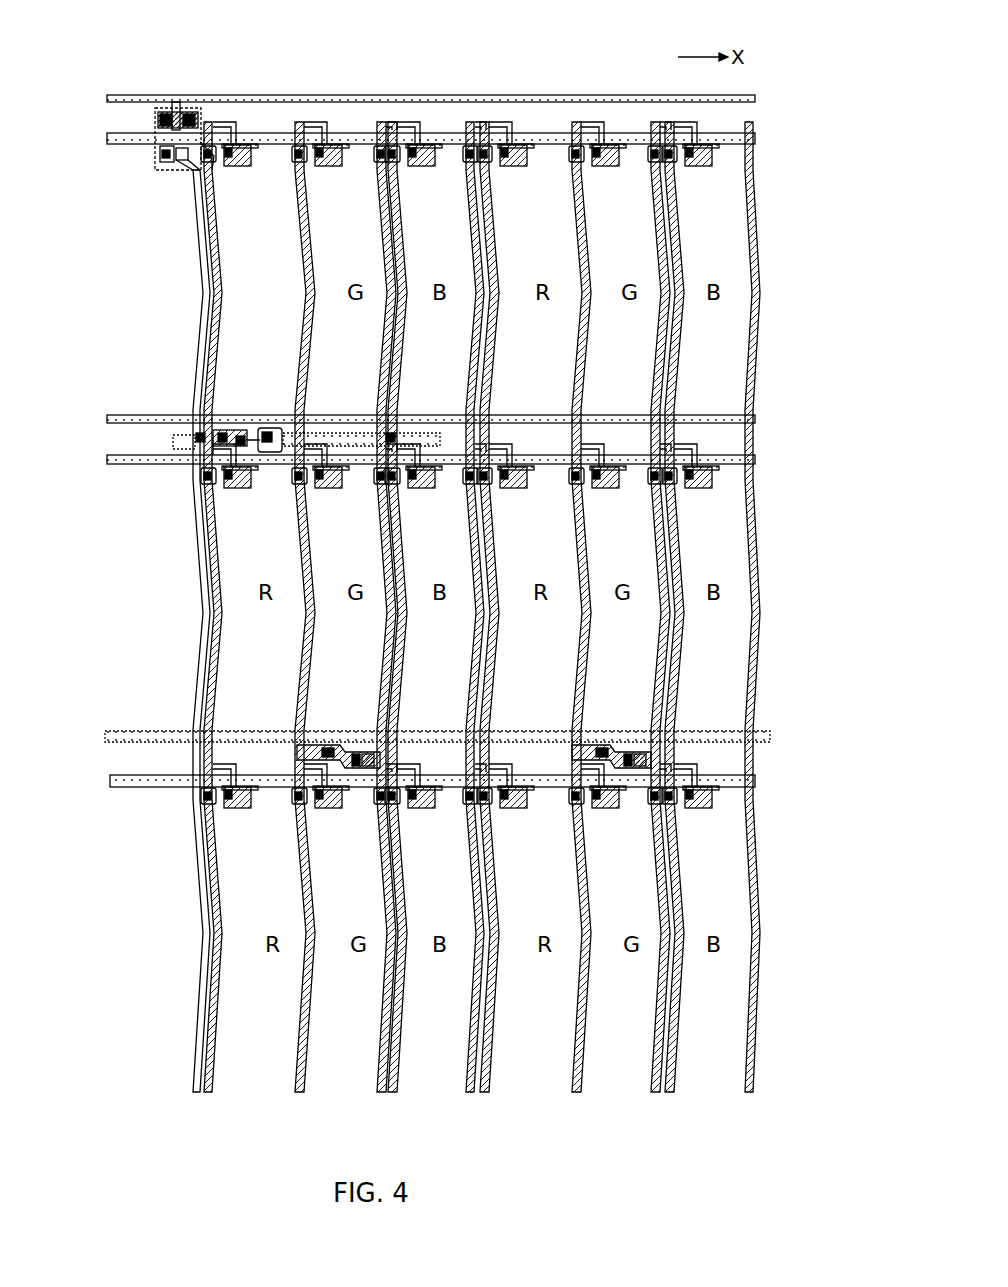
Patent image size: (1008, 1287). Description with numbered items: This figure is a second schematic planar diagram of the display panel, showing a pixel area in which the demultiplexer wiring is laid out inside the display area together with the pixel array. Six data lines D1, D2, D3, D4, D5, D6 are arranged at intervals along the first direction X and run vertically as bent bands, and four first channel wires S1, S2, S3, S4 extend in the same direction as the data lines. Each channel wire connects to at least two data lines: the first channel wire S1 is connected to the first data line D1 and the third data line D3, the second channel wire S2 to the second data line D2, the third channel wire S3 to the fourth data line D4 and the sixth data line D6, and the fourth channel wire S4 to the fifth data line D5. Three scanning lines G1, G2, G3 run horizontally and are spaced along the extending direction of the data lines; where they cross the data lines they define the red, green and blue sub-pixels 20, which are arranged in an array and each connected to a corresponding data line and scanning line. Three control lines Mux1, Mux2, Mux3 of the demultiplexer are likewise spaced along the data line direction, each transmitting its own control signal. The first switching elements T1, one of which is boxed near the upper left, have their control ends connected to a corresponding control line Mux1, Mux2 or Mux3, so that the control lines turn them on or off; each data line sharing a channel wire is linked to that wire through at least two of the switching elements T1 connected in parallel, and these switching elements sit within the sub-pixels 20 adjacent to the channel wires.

The first switching element T1 is at (168, 105).
The sub-pixel 20 is at (266, 178).
The first control line Mux1 is at (401, 87).
The second control line Mux2 is at (402, 418).
The third control line Mux3 is at (409, 741).
The scanning line G1 is at (401, 141).
The scanning line G2 is at (414, 460).
The scanning line G3 is at (414, 782).
The first channel wire S1 is at (182, 658).
The first channel wire S2 is at (377, 634).
The first channel wire S3 is at (468, 634).
The first channel wire S4 is at (655, 634).
The data line D1 is at (235, 634).
The data line D2 is at (302, 634).
The data line D3 is at (400, 634).
The data line D4 is at (496, 634).
The data line D5 is at (580, 634).
The data line D6 is at (682, 634).